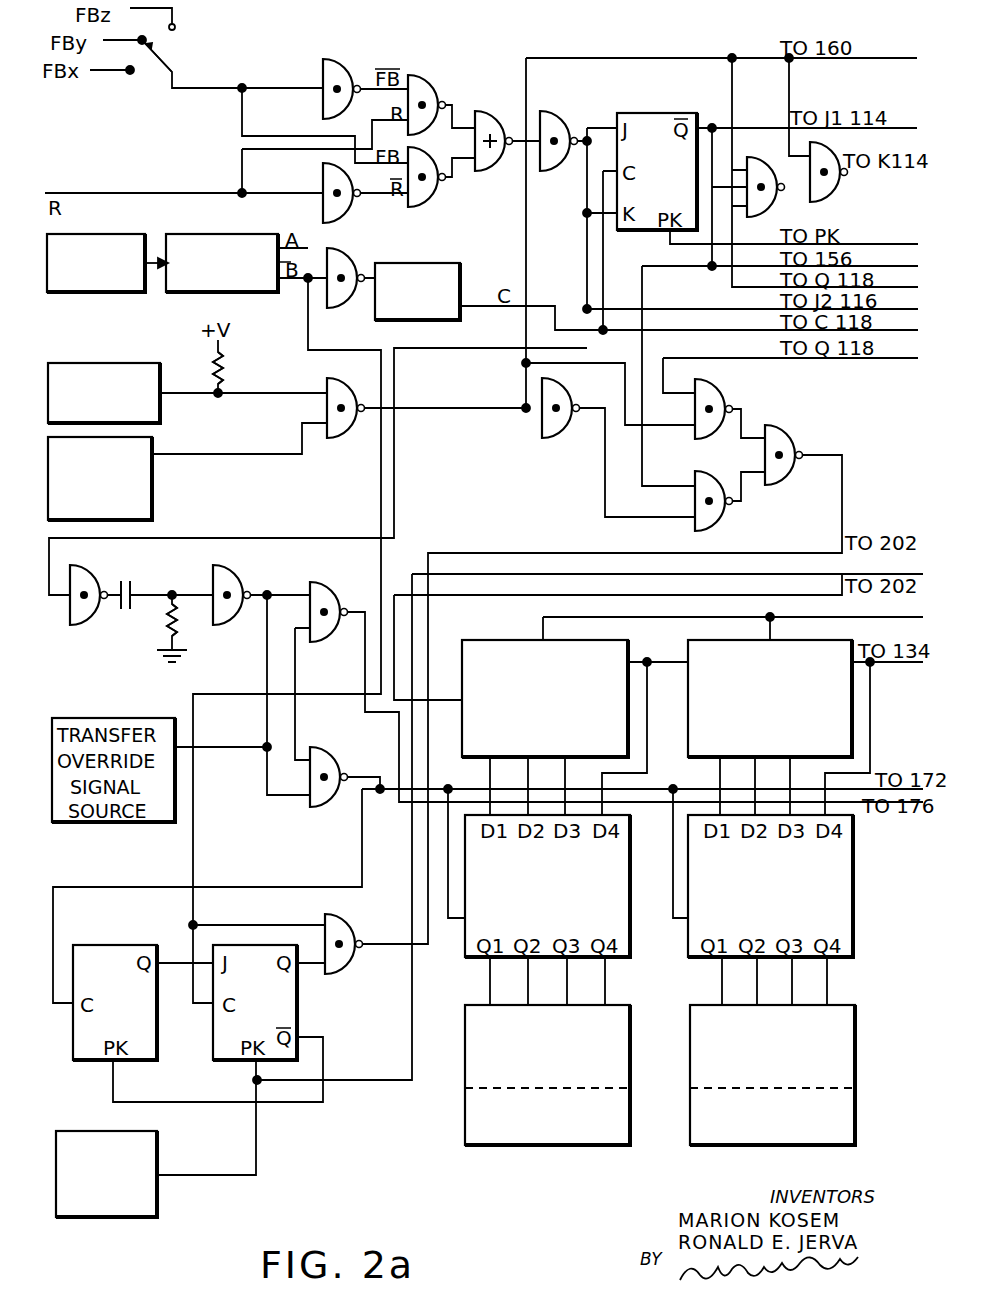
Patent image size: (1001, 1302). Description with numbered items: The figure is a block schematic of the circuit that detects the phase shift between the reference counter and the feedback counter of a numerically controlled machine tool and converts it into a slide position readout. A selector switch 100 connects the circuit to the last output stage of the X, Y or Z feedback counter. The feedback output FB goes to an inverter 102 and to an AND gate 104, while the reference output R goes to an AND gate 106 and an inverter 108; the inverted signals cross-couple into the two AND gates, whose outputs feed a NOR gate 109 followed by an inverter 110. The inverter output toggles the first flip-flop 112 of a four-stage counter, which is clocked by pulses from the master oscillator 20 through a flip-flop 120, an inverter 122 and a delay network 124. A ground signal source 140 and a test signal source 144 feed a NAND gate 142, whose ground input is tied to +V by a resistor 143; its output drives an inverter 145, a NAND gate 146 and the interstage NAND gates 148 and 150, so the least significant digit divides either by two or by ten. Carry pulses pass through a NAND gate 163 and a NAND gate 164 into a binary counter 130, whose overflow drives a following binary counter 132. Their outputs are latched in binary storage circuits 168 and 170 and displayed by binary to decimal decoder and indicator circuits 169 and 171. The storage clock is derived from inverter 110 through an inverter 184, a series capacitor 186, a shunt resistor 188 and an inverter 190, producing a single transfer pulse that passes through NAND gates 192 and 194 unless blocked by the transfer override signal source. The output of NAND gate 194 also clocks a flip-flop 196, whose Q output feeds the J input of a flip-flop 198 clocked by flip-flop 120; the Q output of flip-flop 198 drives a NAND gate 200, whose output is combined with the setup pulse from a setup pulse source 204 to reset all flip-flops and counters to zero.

The master oscillator 20 is at (118, 293).
The selector switch 100 is at (165, 60).
The inverter 102 is at (333, 63).
The AND gate 104 is at (428, 211).
The AND gate 106 is at (430, 81).
The inverter 108 is at (348, 214).
The NOR gate 109 is at (482, 114).
The inverter 110 is at (547, 114).
The first flip-flop 112 is at (659, 114).
The flip-flop 120 is at (244, 293).
The inverter 122 is at (332, 309).
The delay network 124 is at (460, 286).
The binary counter 130 is at (494, 641).
The binary counter 132 is at (687, 648).
The ground signal source 140 is at (113, 363).
The NAND gate 142 is at (332, 428).
The resistor 143 is at (223, 364).
The test signal source 144 is at (152, 488).
The inverter 145 is at (556, 438).
The NAND gate 146 is at (718, 395).
The NAND gate 148 is at (776, 202).
The NAND gate 150 is at (838, 193).
The NAND gate 163 is at (725, 511).
The NAND gate 164 is at (790, 437).
The binary storage circuit 168 is at (631, 915).
The binary to decimal decoder and indicator circuit 169 is at (636, 1106).
The binary storage circuit 170 is at (854, 915).
The binary to decimal decoder and indicator circuit 171 is at (860, 1106).
The inverter 184 is at (80, 627).
The series capacitor 186 is at (132, 610).
The shunt resistor 188 is at (180, 635).
The inverter 190 is at (242, 586).
The NAND gate 192 is at (328, 581).
The NAND gate 194 is at (328, 745).
The flip-flop 196 is at (156, 1029).
The flip-flop 198 is at (296, 988).
The NAND gate 200 is at (352, 960).
The setup pulse source 204 is at (158, 1195).